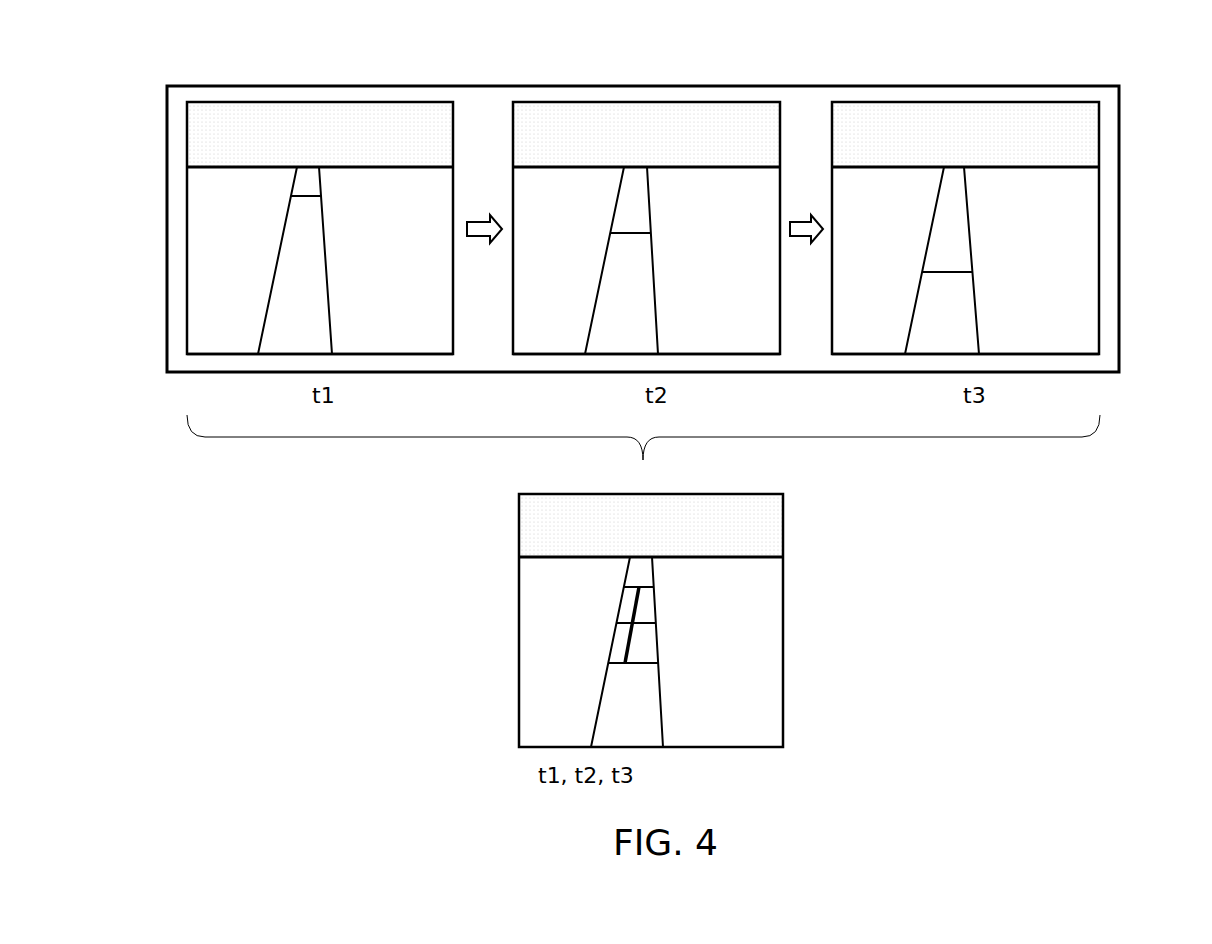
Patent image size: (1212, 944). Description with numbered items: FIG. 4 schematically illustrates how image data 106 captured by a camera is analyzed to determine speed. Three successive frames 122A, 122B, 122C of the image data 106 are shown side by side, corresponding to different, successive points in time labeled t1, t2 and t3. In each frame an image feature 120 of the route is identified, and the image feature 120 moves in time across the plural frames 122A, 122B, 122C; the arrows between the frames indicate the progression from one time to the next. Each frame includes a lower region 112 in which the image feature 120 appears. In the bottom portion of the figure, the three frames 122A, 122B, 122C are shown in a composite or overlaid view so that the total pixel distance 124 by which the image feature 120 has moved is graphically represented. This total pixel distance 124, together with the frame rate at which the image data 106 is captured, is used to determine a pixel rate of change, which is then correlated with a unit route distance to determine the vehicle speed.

The image data 106 is at (1119, 232).
The first frame 122A is at (187, 240).
The second frame 122B is at (647, 102).
The third frame 122C is at (965, 102).
The image feature 120 is at (418, 207).
The display panel 112 is at (231, 354).
The total pixel distance 124 is at (636, 598).